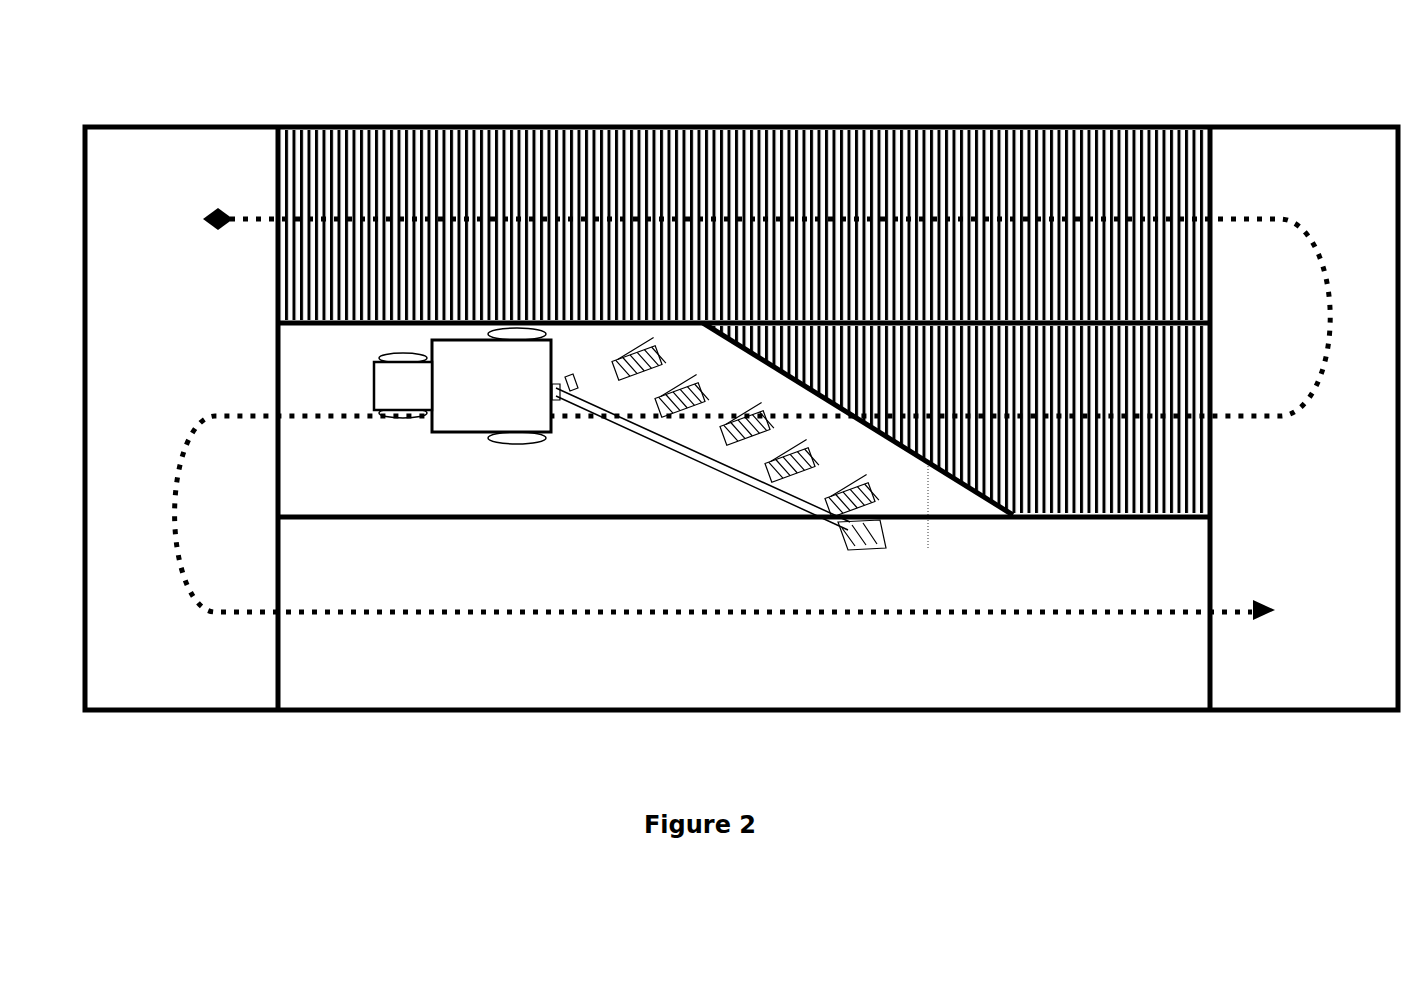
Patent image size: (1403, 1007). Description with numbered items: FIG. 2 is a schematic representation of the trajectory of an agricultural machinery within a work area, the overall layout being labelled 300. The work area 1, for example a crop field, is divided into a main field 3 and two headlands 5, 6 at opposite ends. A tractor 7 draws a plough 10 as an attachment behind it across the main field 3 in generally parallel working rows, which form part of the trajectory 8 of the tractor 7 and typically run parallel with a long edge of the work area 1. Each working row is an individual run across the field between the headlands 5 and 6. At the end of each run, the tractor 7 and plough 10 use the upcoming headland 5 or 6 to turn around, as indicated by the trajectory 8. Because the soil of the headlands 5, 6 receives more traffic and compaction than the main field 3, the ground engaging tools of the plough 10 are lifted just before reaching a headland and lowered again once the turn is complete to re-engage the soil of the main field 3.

The field layout 300 is at (722, 378).
The work area 1 is at (1218, 98).
The main field 3 is at (862, 122).
The headland 5 is at (1337, 158).
The headland 6 is at (122, 337).
The tractor 7 is at (490, 330).
The trajectory 8 is at (1108, 614).
The plough 10 is at (690, 345).